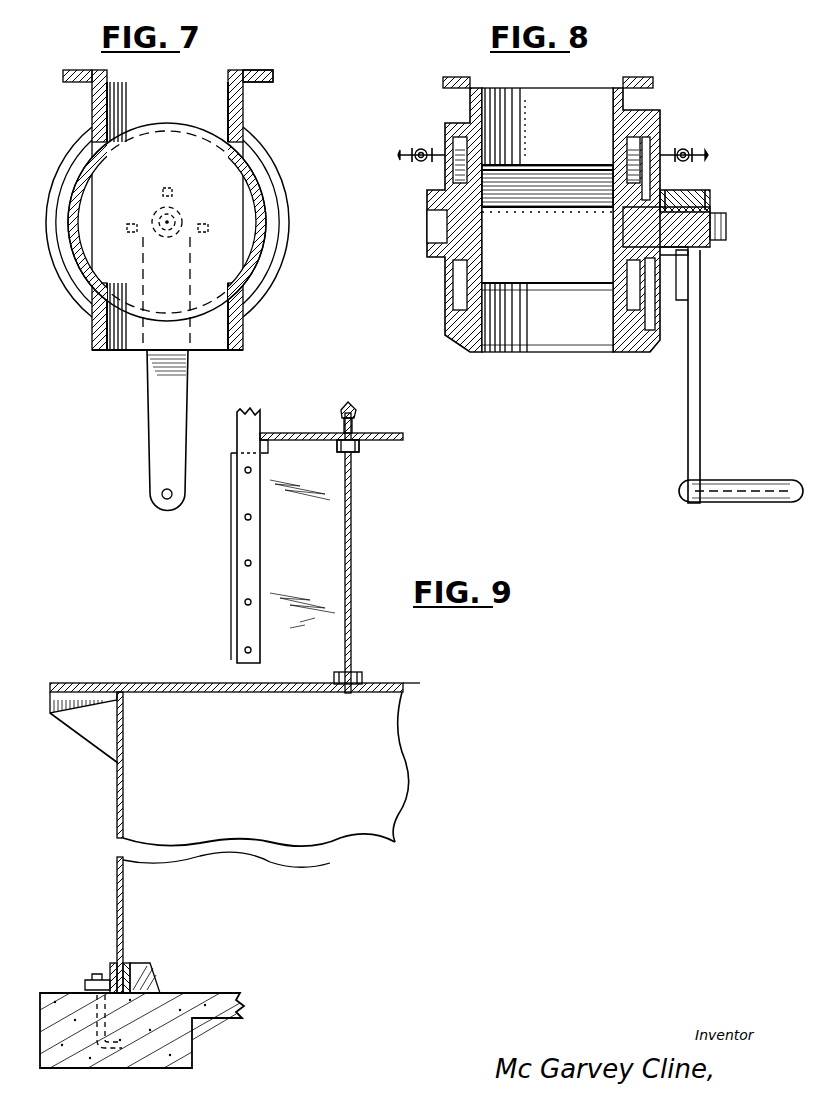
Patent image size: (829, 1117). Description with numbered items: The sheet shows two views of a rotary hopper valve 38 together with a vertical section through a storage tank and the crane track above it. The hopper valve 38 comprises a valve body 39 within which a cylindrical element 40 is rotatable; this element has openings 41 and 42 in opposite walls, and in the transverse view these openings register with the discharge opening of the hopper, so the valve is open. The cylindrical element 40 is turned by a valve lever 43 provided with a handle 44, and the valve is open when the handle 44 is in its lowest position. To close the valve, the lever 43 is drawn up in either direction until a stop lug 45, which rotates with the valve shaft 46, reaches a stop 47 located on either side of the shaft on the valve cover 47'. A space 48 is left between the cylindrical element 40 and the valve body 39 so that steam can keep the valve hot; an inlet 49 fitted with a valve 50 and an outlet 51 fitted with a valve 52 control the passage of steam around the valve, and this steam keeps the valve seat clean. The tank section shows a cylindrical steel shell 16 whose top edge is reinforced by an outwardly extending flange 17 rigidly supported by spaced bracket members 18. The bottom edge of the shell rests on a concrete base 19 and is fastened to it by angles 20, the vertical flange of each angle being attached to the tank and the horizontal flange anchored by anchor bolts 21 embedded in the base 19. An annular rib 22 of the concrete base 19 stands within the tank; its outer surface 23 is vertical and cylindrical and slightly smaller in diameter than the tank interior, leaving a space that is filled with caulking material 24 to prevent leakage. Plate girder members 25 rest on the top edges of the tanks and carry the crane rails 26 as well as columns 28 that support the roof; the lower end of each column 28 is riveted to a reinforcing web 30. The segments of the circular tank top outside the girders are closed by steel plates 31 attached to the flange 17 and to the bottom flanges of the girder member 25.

In FIG. 9, the cylindrical steel shell 16 is at (110, 815).
In FIG. 9, the outwardly extending flange 17 is at (82, 698).
In FIG. 9, the bracket member 18 is at (105, 745).
In FIG. 9, the concrete base 19 is at (212, 1018).
In FIG. 9, the angle 20 is at (110, 970).
In FIG. 9, the anchor bolt 21 is at (106, 1068).
In FIG. 9, the annular rib 22 is at (150, 985).
In FIG. 9, the outer surface 23 is at (143, 975).
In FIG. 9, the caulking material 24 is at (128, 965).
In FIG. 9, the plate girder member 25 is at (350, 552).
In FIG. 9, the crane rail 26 is at (356, 405).
In FIG. 9, the column 28 is at (260, 418).
In FIG. 9, the reinforcing web 30 is at (318, 645).
In FIG. 9, the steel plate 31 is at (165, 690).
In FIG. 7, the hopper valve 38 is at (58, 130).
In FIG. 7, the valve body 39 is at (243, 100).
In FIG. 8, the valve body 39 is at (645, 103).
In FIG. 7, the cylindrical element 40 is at (250, 185).
In FIG. 8, the cylindrical element 40 is at (543, 295).
In FIG. 7, the opening 41 is at (184, 128).
In FIG. 7, the opening 42 is at (212, 300).
In FIG. 7, the valve lever 43 is at (156, 428).
In FIG. 8, the valve lever 43 is at (700, 410).
In FIG. 8, the handle 44 is at (735, 485).
In FIG. 7, the stop lug 45 is at (172, 188).
In FIG. 8, the stop lug 45 is at (672, 192).
In FIG. 8, the valve shaft 46 is at (712, 205).
In FIG. 7, the stop 47 is at (166, 214).
In FIG. 8, the valve cover 47' is at (699, 288).
In FIG. 7, the space 48 is at (262, 218).
In FIG. 8, the space 48 is at (450, 288).
In FIG. 8, the inlet 49 is at (670, 150).
In FIG. 8, the valve 50 is at (695, 150).
In FIG. 8, the outlet 51 is at (433, 150).
In FIG. 8, the valve 52 is at (405, 174).